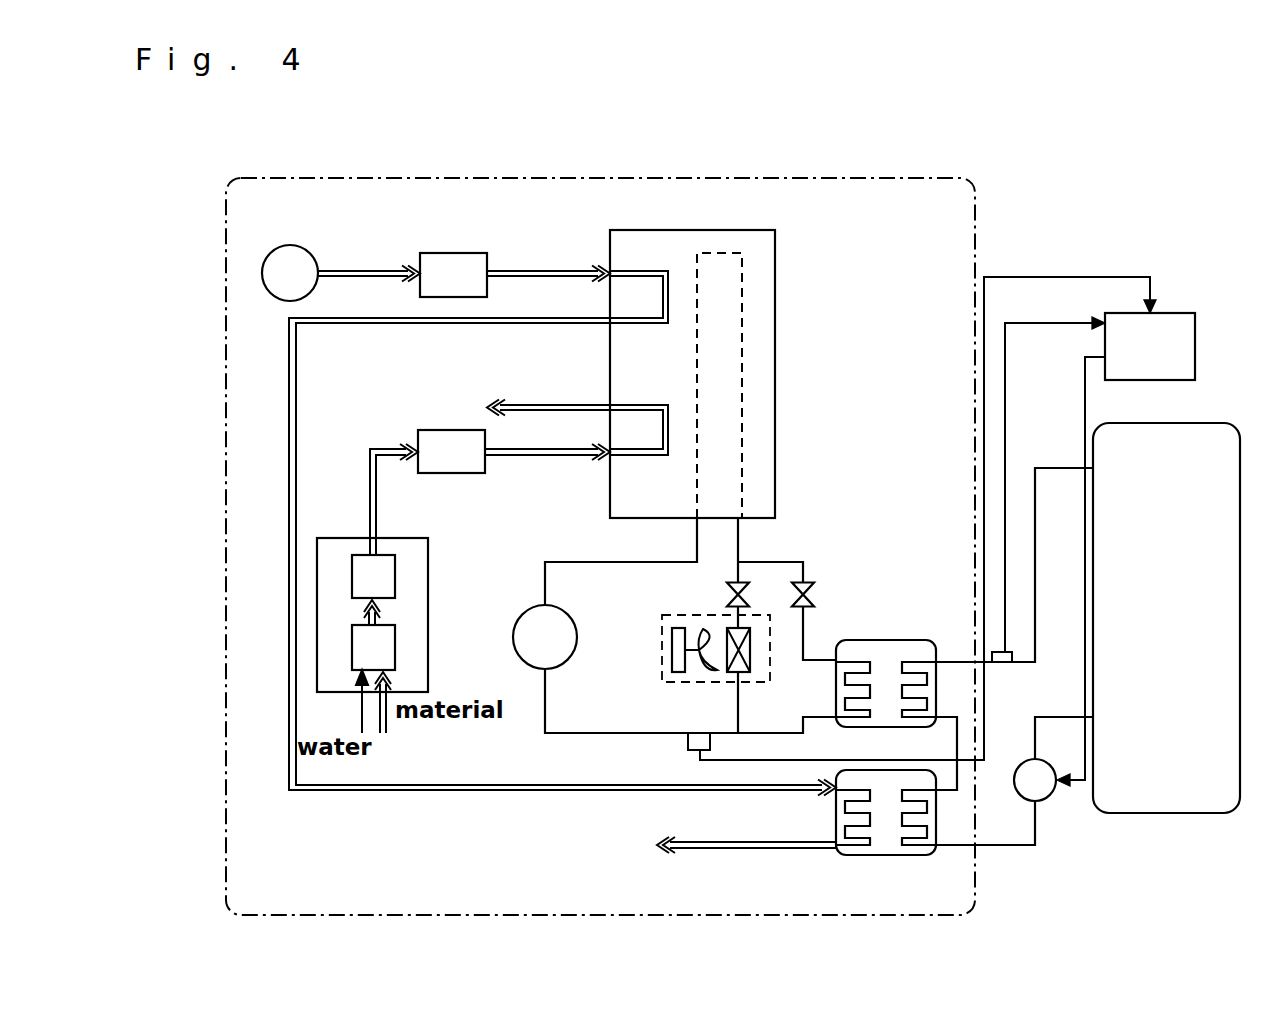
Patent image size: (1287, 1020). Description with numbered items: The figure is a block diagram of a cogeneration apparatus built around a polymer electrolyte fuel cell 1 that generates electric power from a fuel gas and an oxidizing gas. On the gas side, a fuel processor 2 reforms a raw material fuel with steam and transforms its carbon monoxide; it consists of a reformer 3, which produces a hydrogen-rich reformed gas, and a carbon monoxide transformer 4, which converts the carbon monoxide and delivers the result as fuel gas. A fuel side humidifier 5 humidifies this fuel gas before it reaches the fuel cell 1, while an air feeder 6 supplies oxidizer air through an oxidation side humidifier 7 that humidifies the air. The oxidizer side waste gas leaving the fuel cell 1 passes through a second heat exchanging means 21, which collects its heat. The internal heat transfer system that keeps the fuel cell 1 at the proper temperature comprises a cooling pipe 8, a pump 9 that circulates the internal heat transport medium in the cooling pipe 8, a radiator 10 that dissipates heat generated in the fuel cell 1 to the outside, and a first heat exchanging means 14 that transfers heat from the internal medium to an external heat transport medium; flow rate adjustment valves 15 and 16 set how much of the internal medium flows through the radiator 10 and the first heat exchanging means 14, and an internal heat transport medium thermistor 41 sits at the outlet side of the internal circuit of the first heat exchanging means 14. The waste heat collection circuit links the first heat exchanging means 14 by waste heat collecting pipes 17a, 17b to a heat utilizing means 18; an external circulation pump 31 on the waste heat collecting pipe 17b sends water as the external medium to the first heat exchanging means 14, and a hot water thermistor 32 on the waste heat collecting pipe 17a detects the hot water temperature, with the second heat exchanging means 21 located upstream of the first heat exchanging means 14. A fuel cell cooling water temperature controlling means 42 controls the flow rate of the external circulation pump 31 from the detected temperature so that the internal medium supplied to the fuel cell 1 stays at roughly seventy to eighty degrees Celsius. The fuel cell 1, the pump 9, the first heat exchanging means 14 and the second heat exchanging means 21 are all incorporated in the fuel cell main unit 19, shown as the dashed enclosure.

The fuel cell 1 is at (776, 255).
The fuel processor 2 is at (419, 538).
The reformer 3 is at (398, 643).
The carbon monoxide transformer 4 is at (352, 556).
The fuel side humidifier 5 is at (434, 429).
The air feeder 6 is at (280, 247).
The oxidation side humidifier 7 is at (432, 252).
The cooling pipe 8 is at (562, 736).
The pump 9 is at (518, 613).
The radiator 10 is at (660, 621).
The first heat exchanging means 14 is at (886, 637).
The flow rate adjustment valve 15 is at (744, 578).
The flow rate adjustment valve 16 is at (811, 580).
The waste heat collecting pipe 17a is at (1036, 665).
The waste heat collecting pipe 17b is at (1036, 846).
The heat utilizing means 18 is at (1203, 425).
The fuel cell main unit 19 is at (782, 177).
The second heat exchanging means 21 is at (885, 857).
The external circulation pump 31 is at (1044, 801).
The hot water thermistor 32 is at (993, 652).
The internal heat transport medium thermistor 41 is at (686, 742).
The fuel cell cooling water temperature controlling means 42 is at (1198, 347).